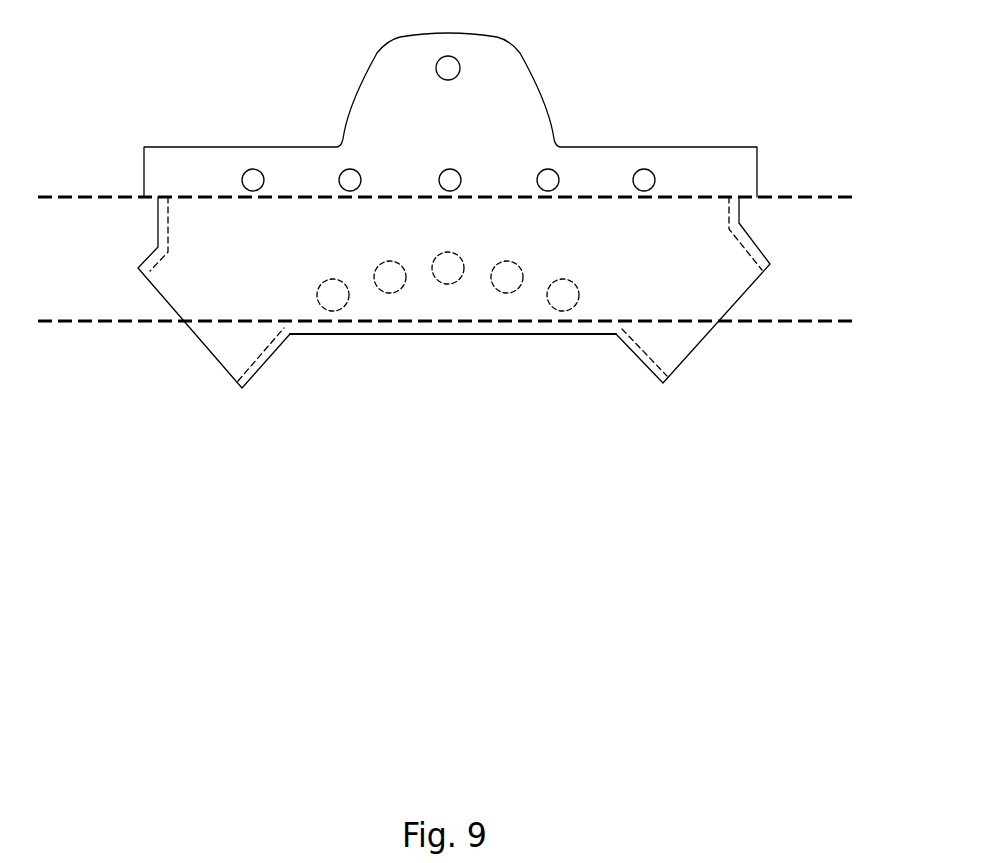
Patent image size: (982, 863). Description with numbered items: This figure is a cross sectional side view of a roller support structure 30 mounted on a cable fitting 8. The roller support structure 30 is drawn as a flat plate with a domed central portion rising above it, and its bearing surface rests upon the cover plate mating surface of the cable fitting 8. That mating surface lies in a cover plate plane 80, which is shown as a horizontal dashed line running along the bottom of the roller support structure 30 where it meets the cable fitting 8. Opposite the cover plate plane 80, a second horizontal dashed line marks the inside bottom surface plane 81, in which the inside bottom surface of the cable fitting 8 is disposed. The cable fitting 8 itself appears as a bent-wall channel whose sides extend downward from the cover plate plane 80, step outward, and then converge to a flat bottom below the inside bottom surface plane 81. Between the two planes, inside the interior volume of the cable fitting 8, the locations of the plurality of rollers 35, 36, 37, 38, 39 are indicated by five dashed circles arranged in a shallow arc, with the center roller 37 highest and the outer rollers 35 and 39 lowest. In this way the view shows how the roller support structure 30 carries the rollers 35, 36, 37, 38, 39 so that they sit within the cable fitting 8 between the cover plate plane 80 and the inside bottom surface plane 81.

The cable fitting 8 is at (423, 336).
The roller support structure 30 is at (623, 170).
The roller 35 is at (345, 303).
The roller 36 is at (402, 285).
The roller 37 is at (460, 276).
The roller 38 is at (519, 285).
The roller 39 is at (575, 303).
The cover plate plane 80 is at (69, 195).
The inside bottom surface plane 81 is at (113, 323).